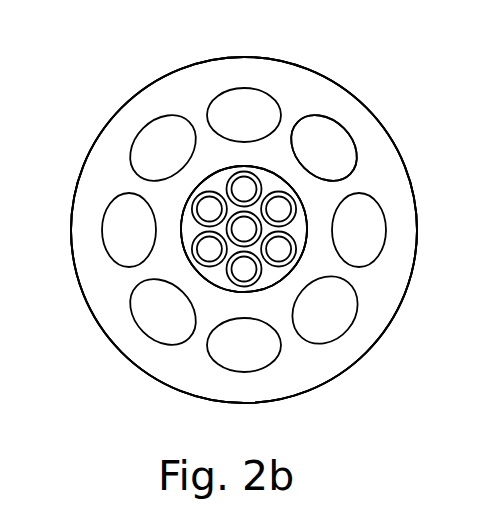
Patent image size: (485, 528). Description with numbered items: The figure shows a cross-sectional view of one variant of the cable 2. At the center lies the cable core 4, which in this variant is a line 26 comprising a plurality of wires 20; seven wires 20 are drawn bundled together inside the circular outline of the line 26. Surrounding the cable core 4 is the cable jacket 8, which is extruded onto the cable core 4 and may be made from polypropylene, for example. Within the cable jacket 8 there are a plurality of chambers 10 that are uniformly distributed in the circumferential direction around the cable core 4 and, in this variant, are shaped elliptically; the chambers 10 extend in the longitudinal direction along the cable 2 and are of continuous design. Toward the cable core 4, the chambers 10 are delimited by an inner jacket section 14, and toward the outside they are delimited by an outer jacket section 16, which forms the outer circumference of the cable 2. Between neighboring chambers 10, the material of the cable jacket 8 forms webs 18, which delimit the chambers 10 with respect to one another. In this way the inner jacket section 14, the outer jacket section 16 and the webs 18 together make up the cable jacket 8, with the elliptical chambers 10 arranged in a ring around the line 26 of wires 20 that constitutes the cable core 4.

The cable 2 is at (77, 60).
The cable jacket 8 is at (87, 145).
The chambers 10 is at (244, 230).
The inner jacket section 14 is at (213, 162).
The outer jacket section 16 is at (257, 54).
The webs 18 is at (297, 120).
The wires 20 is at (290, 272).
The cable core 4 is at (217, 303).
The line 26 is at (217, 303).